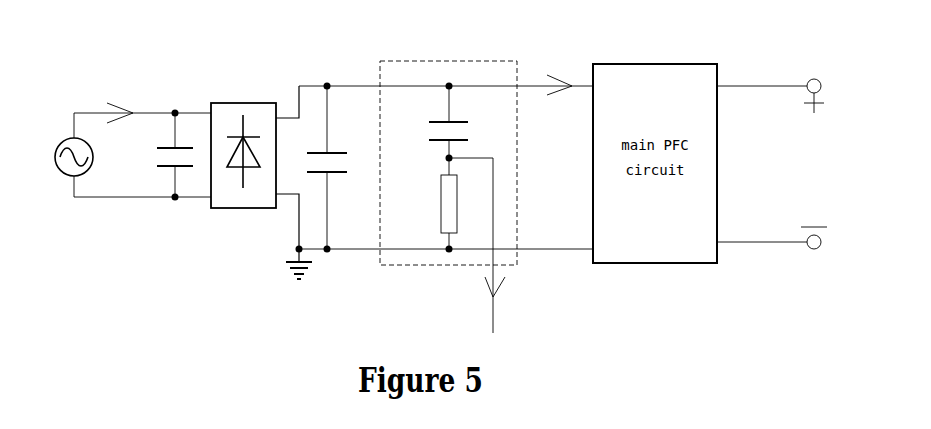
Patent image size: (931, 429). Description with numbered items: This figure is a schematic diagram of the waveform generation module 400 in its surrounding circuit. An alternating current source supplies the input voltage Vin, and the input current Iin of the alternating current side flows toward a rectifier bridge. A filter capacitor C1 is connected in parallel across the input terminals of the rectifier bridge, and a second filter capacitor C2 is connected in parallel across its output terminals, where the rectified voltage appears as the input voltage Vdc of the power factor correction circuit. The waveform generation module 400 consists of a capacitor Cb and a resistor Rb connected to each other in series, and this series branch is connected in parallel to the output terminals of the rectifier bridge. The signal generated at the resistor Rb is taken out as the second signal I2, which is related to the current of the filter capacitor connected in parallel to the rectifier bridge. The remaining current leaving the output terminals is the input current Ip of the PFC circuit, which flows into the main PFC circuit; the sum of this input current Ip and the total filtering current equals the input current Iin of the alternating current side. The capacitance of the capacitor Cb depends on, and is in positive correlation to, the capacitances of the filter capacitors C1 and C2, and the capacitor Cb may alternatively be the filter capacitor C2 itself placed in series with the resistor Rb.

The waveform generation module 400 is at (448, 148).
The input voltage Vin is at (74, 130).
The input current of the alternating current side Iin is at (119, 101).
The filter capacitor C1 is at (159, 155).
The filter capacitor C2 is at (322, 169).
The input voltage of the PFC circuit Vdc is at (315, 73).
The capacitor Cb is at (430, 122).
The resistor Rb is at (426, 200).
The second signal I2 is at (491, 245).
The input current of the PFC circuit Ip is at (559, 71).